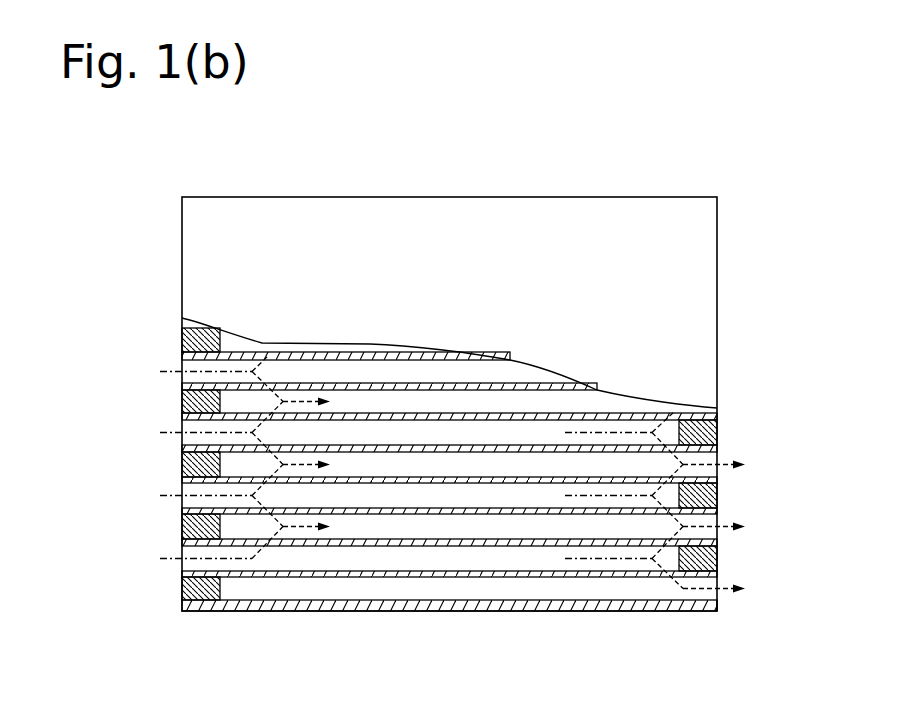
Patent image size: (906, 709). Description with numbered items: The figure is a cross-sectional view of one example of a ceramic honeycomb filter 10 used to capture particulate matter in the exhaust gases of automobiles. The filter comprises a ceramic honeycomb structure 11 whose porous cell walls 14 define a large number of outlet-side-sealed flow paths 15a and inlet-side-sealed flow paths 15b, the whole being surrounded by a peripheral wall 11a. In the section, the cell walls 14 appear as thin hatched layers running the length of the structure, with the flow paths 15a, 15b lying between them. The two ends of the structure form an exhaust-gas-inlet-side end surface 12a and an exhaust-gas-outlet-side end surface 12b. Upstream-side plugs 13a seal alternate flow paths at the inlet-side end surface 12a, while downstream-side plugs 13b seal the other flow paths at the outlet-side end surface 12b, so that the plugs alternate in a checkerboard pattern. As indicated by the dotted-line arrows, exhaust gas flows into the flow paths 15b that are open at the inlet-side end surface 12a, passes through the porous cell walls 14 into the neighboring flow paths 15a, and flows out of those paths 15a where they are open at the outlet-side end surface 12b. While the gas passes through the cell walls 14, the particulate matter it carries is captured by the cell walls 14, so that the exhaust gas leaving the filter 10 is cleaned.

The ceramic honeycomb filter 10 is at (228, 172).
The ceramic honeycomb structure 11 is at (403, 197).
The peripheral wall 11a is at (300, 611).
The exhaust-gas-inlet-side end surface 12a is at (182, 586).
The exhaust-gas-outlet-side end surface 12b is at (717, 598).
The upstream-side plug 13a is at (182, 522).
The downstream-side plug 13b is at (717, 549).
The porous cell wall 14 is at (375, 577).
The outlet-side-sealed flow path 15a is at (457, 528).
The inlet-side-sealed flow path 15b is at (527, 554).